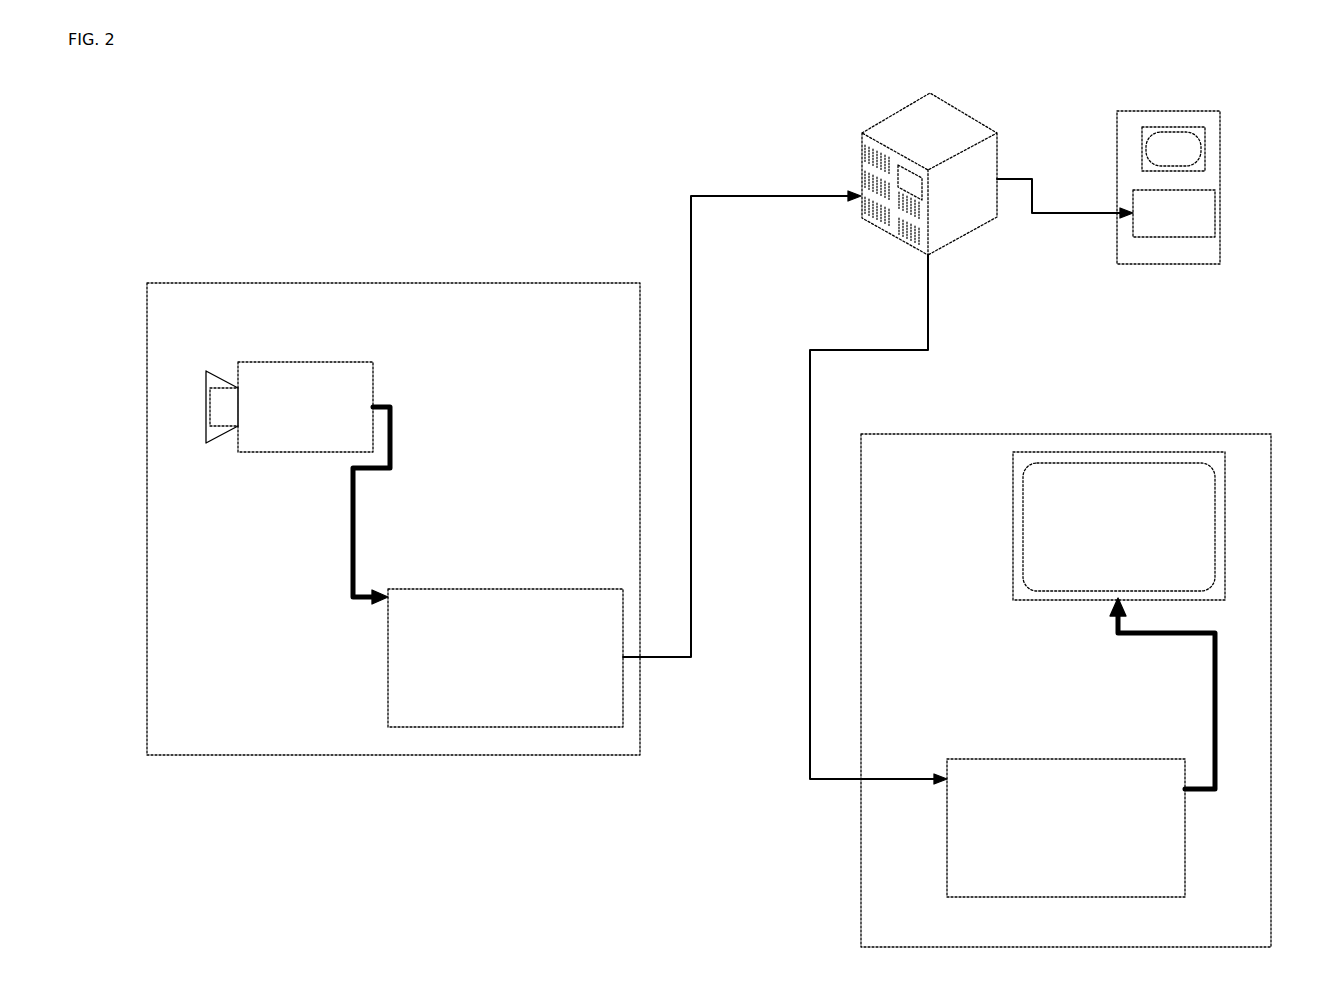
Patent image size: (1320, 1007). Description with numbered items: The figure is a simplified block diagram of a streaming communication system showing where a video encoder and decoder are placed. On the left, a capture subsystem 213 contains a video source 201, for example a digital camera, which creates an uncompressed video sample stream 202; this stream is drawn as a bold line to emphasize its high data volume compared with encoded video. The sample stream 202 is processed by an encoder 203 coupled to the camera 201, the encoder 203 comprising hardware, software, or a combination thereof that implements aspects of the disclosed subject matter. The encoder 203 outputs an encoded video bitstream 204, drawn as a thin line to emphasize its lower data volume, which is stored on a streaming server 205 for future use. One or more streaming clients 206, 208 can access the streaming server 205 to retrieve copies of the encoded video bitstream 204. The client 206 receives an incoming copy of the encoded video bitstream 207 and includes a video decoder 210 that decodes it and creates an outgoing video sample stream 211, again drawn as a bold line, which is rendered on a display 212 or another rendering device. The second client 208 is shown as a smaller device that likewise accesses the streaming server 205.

The video source 201 is at (307, 362).
The video sample stream 202 is at (353, 541).
The encoder 203 is at (518, 589).
The encoded video bitstream 204 is at (690, 230).
The streaming server 205 is at (862, 160).
The streaming client 206 is at (1047, 213).
The copy of encoded video bitstream 207 is at (810, 590).
The streaming client 208 is at (1220, 162).
The video decoder 210 is at (947, 874).
The outgoing video sample stream 211 is at (1214, 690).
The display 212 is at (1013, 524).
The capture subsystem 213 is at (300, 757).